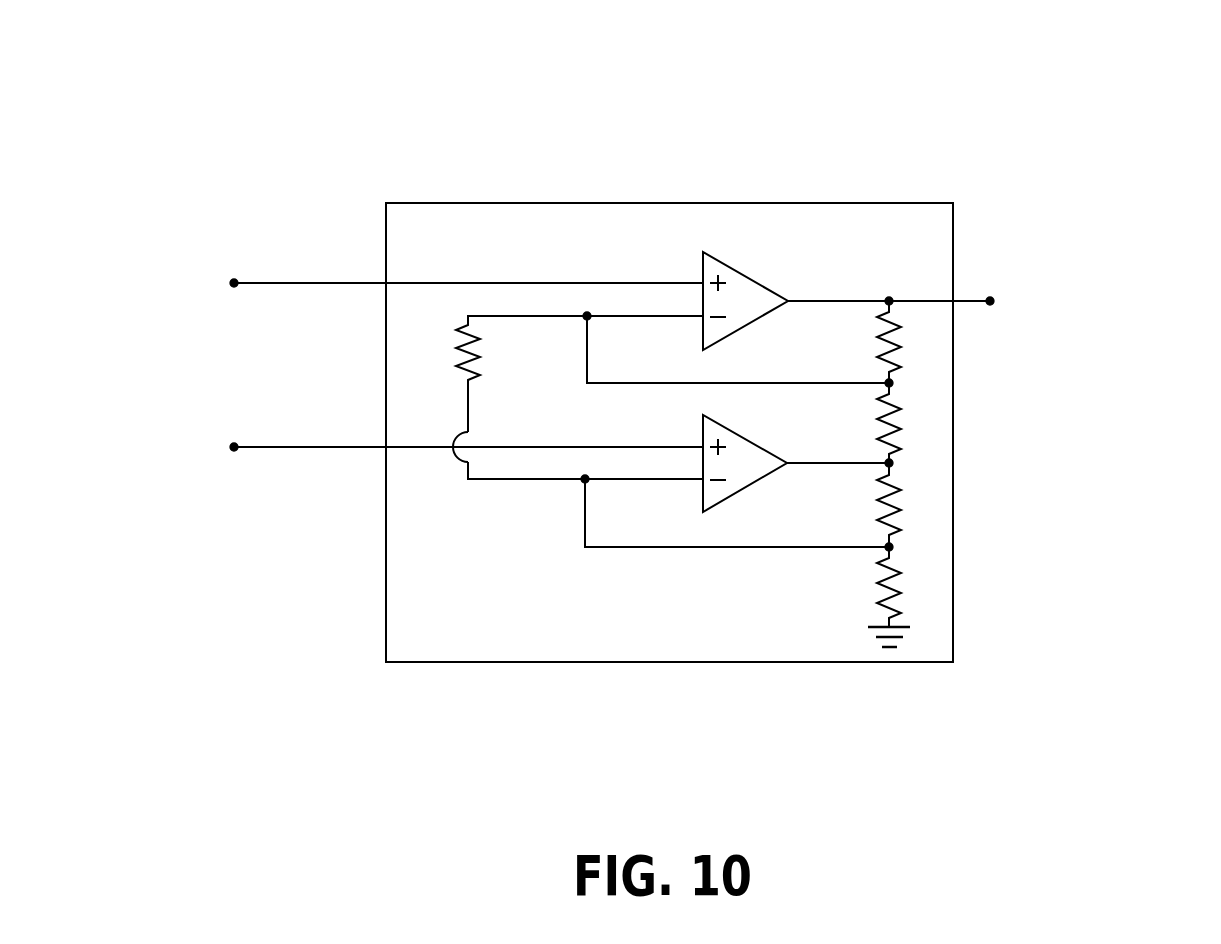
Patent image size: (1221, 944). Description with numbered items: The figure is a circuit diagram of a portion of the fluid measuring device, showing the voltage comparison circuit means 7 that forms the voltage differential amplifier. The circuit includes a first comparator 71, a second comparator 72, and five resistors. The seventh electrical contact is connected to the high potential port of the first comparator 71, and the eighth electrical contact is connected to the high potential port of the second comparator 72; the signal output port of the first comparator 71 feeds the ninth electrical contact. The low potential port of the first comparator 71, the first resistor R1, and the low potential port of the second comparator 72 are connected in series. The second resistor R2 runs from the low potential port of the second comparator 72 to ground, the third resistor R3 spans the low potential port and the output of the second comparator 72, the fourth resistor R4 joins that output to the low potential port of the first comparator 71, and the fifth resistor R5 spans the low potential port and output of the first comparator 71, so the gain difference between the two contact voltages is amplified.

The voltage comparison circuit means 7 is at (974, 192).
The first comparator 71 is at (748, 272).
The second comparator 72 is at (745, 488).
The first resistor R1 is at (578, 397).
The second resistor R2 is at (905, 597).
The third resistor R3 is at (910, 505).
The fourth resistor R4 is at (910, 423).
The fifth resistor R5 is at (910, 342).